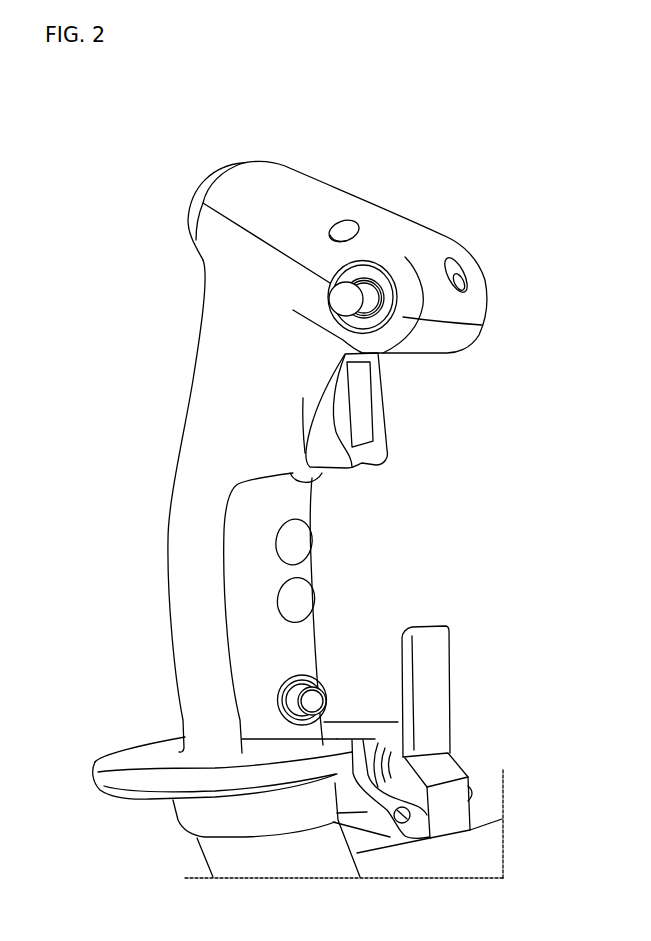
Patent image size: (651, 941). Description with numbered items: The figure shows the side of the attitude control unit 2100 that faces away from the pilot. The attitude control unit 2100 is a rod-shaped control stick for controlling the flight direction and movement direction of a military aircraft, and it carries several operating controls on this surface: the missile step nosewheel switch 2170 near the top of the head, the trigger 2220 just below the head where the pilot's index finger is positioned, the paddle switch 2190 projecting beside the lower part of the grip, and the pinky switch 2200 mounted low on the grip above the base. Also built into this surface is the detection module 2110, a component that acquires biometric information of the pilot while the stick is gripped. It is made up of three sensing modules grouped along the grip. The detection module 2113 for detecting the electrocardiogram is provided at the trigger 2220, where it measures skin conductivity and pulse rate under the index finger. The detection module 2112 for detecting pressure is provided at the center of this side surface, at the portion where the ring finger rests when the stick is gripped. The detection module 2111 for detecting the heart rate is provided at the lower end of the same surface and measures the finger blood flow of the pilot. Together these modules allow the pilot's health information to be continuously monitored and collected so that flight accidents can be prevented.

The attitude control unit 2100 is at (140, 104).
The missile step nosewheel switch 2170 is at (342, 296).
The trigger 2220 is at (323, 430).
The detection module 2110 is at (492, 400).
The detection module for detecting the electrocardiogram 2113 is at (357, 411).
The detection module for detecting the pressure 2112 is at (302, 538).
The detection module for detecting the heart rate 2111 is at (303, 593).
The paddle switch 2190 is at (433, 655).
The pinky switch 2200 is at (325, 697).